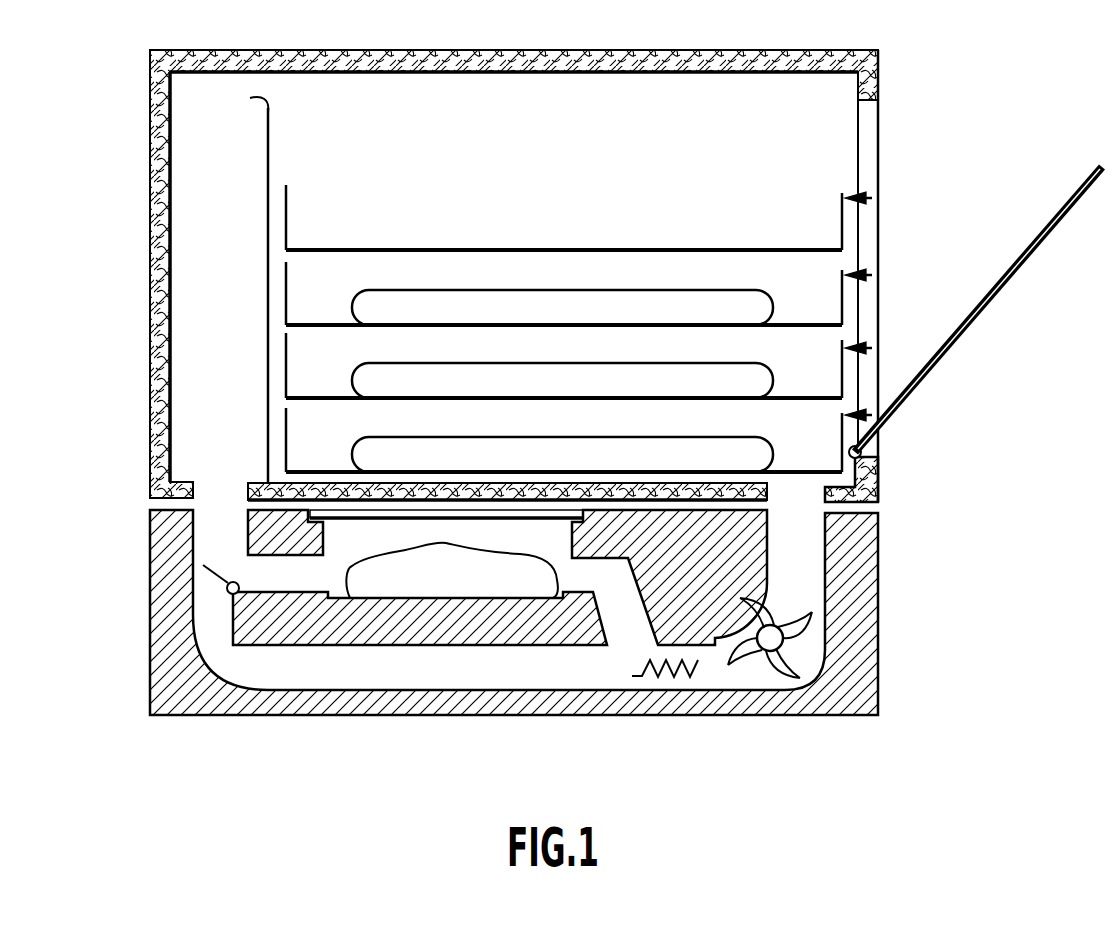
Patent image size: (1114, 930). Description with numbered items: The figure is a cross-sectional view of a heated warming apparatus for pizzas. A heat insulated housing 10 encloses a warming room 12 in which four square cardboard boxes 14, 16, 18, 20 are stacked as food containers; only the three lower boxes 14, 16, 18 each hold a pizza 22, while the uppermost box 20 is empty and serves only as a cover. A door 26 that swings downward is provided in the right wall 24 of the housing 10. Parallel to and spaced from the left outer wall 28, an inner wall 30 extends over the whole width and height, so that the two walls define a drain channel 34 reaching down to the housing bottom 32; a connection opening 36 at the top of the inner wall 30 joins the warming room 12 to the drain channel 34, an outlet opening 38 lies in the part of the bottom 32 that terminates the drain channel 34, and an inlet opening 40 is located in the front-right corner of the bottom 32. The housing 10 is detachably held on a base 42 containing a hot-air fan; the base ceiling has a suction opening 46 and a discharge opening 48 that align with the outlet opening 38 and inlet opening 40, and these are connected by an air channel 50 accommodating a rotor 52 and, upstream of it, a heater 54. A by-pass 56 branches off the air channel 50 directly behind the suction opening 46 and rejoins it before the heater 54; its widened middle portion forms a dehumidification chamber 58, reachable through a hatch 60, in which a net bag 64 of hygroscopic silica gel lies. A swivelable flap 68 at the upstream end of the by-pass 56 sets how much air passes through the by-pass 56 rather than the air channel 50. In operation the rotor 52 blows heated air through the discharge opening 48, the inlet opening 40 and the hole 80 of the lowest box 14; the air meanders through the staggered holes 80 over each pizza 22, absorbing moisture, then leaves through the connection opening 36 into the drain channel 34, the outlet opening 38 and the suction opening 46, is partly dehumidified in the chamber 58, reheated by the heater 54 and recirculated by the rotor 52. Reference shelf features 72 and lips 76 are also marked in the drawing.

The heat insulated housing 10 is at (552, 54).
The warming room 12 is at (535, 196).
The lowest cardboard box 14 is at (878, 436).
The second cardboard box 16 is at (880, 349).
The third cardboard box 18 is at (880, 275).
The uppermost cardboard box 20 is at (880, 201).
The pizza 22 is at (443, 321).
The right wall 24 is at (880, 78).
The door 26 is at (1072, 188).
The left outer wall 28 is at (148, 105).
The inner wall 30 is at (270, 134).
The housing bottom 32 is at (258, 483).
The drain channel 34 is at (207, 228).
The connection opening 36 is at (246, 91).
The outlet opening 38 is at (193, 489).
The inlet opening 40 is at (822, 495).
The base 42 is at (253, 715).
The suction opening 46 is at (197, 527).
The discharge opening 48 is at (823, 560).
The air channel 50 is at (390, 681).
The rotor 52 is at (787, 685).
The heater 54 is at (634, 672).
The by-pass 56 is at (302, 557).
The dehumidification chamber 58 is at (528, 551).
The hatch 60 is at (382, 521).
The net bag 64 is at (435, 591).
The flap 68 is at (227, 585).
The shelves 72 is at (288, 223).
The shelf lips 76 is at (288, 299).
The hole 80 is at (822, 327).